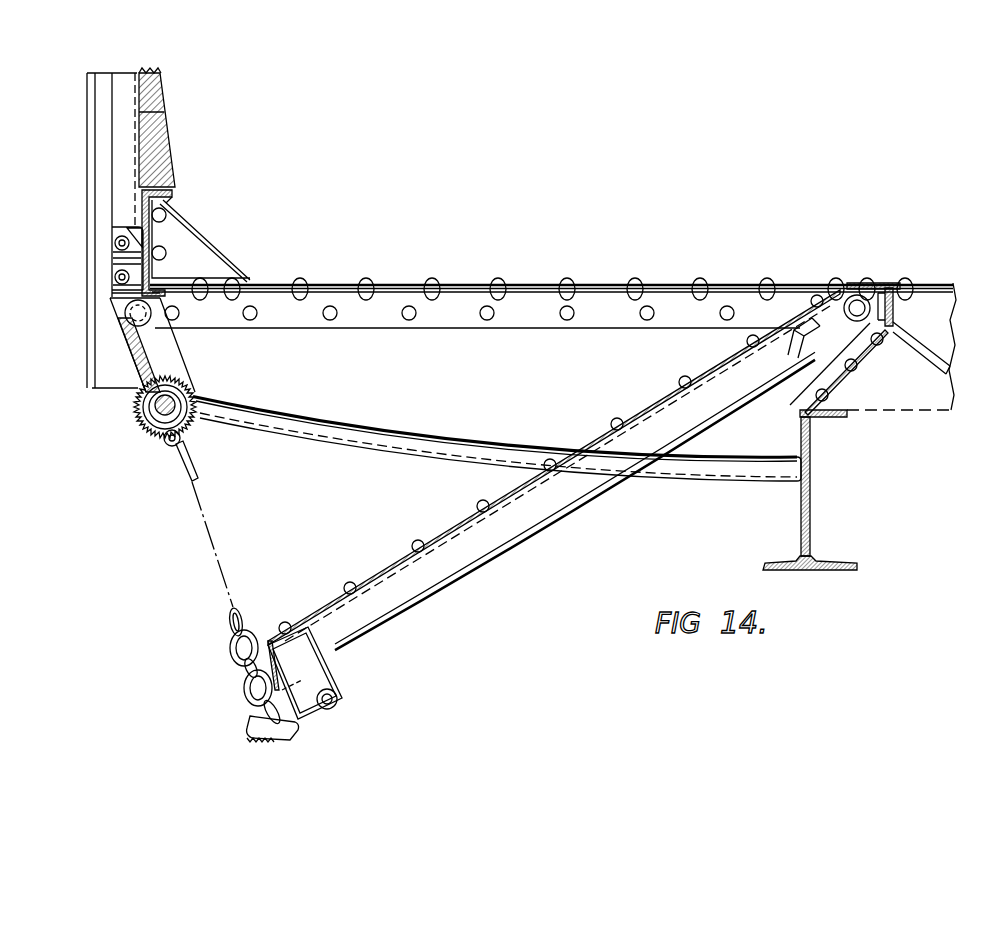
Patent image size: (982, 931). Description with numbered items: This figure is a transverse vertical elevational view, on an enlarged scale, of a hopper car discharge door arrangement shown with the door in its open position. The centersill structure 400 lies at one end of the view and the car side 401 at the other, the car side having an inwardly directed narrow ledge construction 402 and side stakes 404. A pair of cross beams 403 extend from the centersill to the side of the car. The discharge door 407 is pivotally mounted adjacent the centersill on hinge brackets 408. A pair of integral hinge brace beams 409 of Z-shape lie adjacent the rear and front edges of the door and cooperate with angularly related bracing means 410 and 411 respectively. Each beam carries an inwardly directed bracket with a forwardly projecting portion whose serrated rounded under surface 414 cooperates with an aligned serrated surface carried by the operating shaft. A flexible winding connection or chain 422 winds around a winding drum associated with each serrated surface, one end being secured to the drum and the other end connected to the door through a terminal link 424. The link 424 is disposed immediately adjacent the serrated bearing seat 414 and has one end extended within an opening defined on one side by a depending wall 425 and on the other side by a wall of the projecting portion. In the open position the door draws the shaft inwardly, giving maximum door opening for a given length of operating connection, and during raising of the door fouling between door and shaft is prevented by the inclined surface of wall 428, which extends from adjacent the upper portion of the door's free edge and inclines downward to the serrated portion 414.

The centersill structure 400 is at (810, 471).
The car side 401 is at (160, 157).
The ledge construction 402 is at (167, 290).
The cross beams 403 is at (497, 429).
The side stakes 404 is at (103, 252).
The discharge door 407 is at (473, 517).
The hinge brackets 408 is at (853, 325).
The hinge brace beams 409 is at (410, 592).
The bracing means 410 is at (768, 386).
The bracing means 411 is at (332, 627).
The serrated rounded under surface 414 is at (264, 740).
The chain 422 is at (168, 453).
The terminal link 424 is at (302, 738).
The depending wall 425 is at (323, 717).
The wall 428 is at (243, 680).